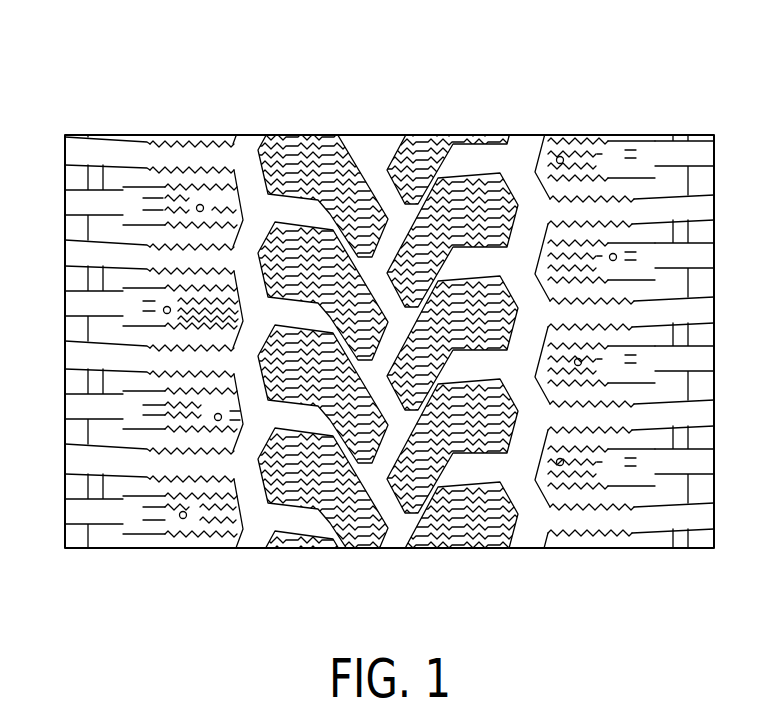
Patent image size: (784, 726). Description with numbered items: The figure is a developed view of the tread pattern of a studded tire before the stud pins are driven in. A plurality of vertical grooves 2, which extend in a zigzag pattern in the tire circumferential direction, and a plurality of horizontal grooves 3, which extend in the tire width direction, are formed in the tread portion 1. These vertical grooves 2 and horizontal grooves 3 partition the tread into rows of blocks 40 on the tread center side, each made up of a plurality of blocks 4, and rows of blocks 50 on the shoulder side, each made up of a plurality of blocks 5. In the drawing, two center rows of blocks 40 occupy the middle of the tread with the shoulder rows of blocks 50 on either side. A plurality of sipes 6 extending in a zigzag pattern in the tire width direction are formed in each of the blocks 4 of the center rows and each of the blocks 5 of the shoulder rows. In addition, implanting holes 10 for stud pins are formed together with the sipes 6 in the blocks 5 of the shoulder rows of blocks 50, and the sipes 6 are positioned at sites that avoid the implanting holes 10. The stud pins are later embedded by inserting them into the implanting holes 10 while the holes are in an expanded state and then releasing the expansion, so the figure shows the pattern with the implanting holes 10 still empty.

The tread portion 1 is at (612, 135).
The vertical grooves 2 is at (247, 155).
The horizontal grooves 3 is at (178, 158).
The blocks 4 is at (331, 157).
The blocks 5 is at (142, 167).
The sipes 6 is at (210, 162).
The implanting holes 10 is at (165, 310).
The rows of blocks 40 is at (262, 551).
The rows of blocks 50 is at (62, 551).